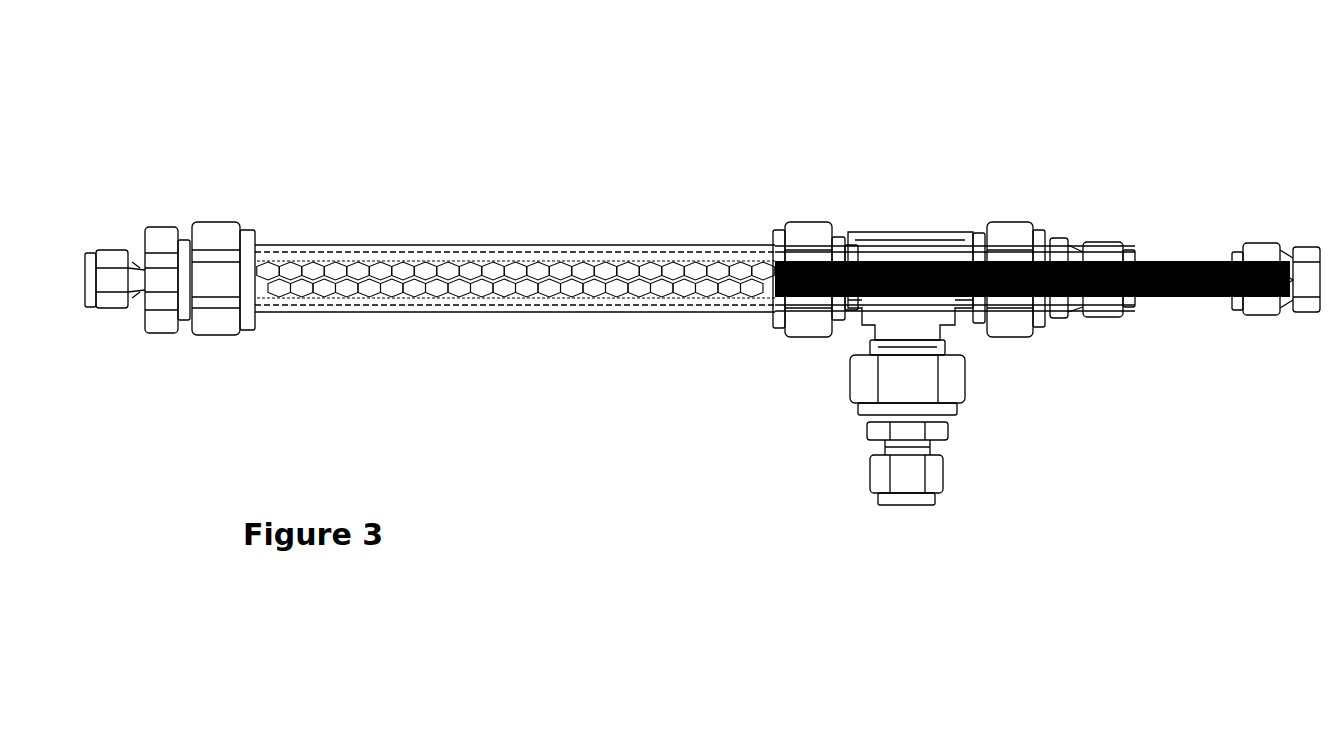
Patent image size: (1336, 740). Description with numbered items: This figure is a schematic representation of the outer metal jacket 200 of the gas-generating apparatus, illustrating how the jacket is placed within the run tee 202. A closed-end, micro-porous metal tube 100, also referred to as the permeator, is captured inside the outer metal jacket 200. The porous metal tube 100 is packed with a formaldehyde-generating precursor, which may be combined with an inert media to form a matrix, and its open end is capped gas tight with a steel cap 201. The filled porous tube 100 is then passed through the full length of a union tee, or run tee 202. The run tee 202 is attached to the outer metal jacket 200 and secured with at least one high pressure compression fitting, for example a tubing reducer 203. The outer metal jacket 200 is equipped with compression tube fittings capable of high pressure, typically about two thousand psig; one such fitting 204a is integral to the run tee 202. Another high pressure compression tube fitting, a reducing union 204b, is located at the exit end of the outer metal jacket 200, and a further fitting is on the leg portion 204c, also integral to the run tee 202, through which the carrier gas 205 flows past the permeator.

The micro-porous metal tube 100 is at (643, 278).
The outer metal jacket 200 is at (360, 240).
The steel cap 201 is at (1272, 228).
The run tee 202 is at (897, 222).
The tubing reducer 203 is at (1109, 330).
The compression tube fitting 204a is at (797, 220).
The reducing union 204b is at (220, 215).
The leg portion 204c is at (970, 373).
The carrier gas 205 is at (903, 527).